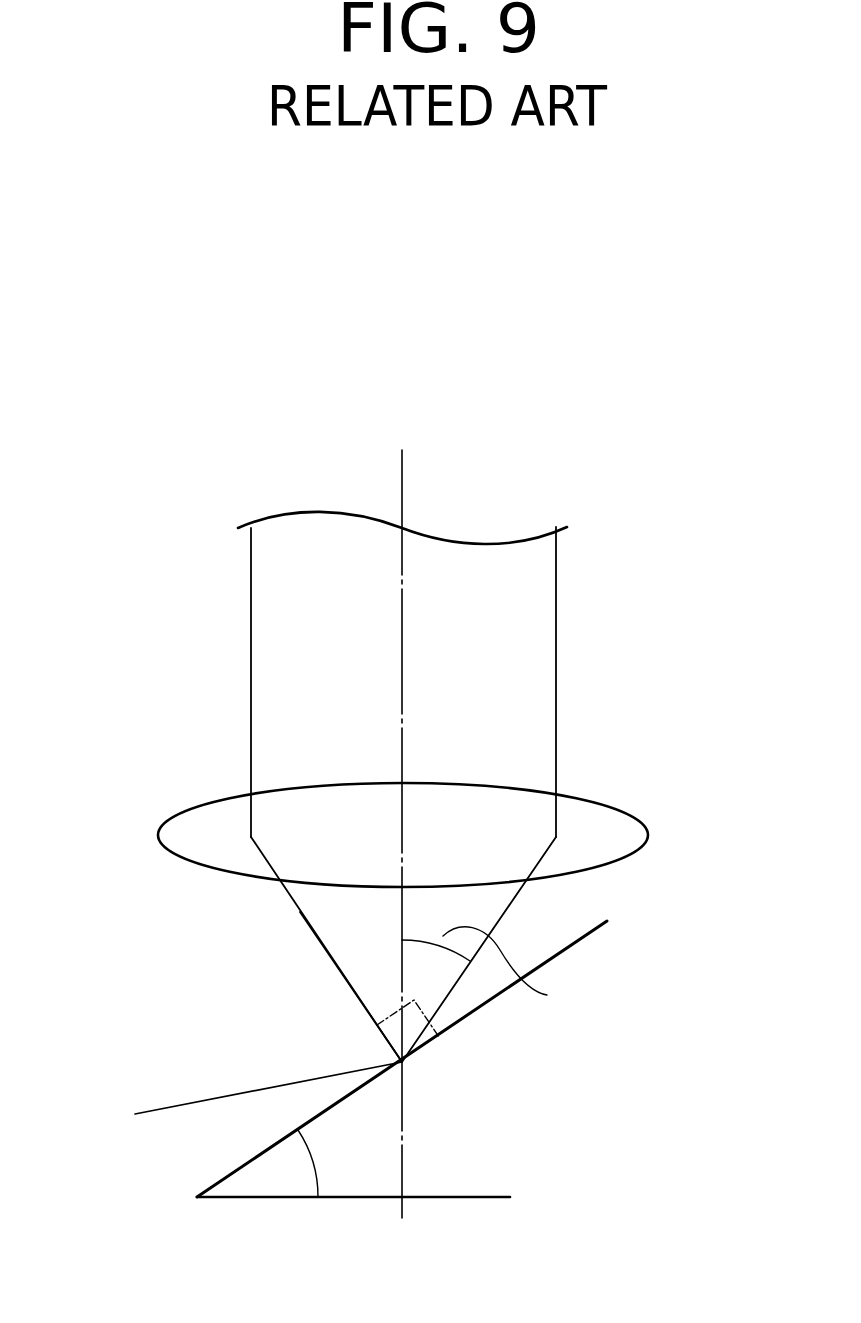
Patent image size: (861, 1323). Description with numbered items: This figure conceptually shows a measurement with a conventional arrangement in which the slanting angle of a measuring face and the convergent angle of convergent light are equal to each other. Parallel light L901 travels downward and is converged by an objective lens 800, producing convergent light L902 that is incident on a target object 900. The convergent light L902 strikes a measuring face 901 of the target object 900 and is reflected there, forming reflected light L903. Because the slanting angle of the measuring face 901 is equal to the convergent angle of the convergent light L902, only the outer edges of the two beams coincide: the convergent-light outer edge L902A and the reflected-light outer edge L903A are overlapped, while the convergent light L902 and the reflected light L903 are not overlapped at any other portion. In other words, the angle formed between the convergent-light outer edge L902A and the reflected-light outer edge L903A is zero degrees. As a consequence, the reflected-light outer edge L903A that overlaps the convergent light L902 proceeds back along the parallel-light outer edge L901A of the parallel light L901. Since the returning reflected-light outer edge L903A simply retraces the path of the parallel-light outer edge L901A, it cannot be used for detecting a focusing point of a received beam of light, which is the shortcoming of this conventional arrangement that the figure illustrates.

The parallel-light outer edge L901A is at (252, 628).
The parallel light L901 is at (537, 626).
The objective lens 800 is at (157, 835).
The convergent-light outer edge L902A is at (300, 912).
The convergent light L902 is at (488, 907).
The reflected-light outer edge L903A is at (327, 951).
The reflected light L903 is at (177, 1090).
The measuring face 901 is at (262, 1153).
The target object 900 is at (463, 1178).